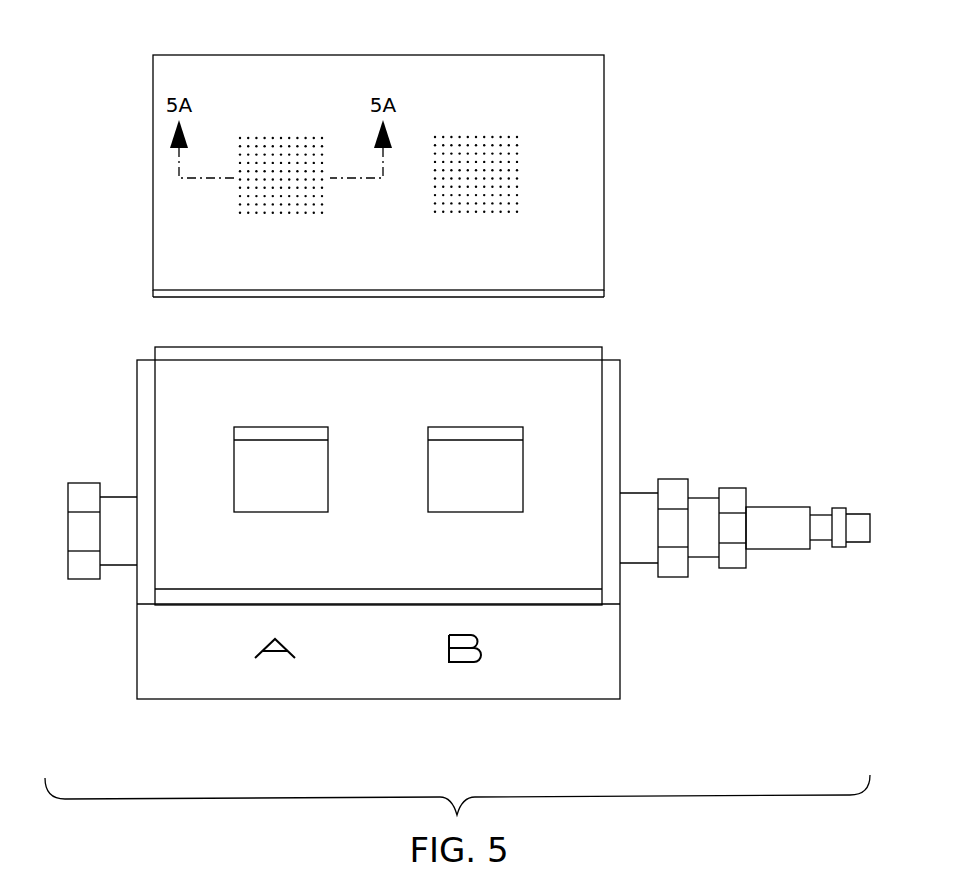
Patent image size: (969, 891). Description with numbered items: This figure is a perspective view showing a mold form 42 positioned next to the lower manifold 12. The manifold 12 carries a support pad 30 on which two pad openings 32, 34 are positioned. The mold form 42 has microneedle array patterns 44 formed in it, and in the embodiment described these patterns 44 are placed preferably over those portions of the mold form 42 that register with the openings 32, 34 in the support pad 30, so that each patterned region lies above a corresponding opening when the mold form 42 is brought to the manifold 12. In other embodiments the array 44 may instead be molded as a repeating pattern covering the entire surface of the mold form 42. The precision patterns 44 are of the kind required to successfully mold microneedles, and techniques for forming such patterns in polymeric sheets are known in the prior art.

The lower manifold 12 is at (187, 699).
The support pad 30 is at (585, 405).
The pad opening 32 is at (277, 462).
The pad opening 34 is at (487, 465).
The mold form 42 is at (153, 232).
The microneedle array pattern 44 is at (276, 133).